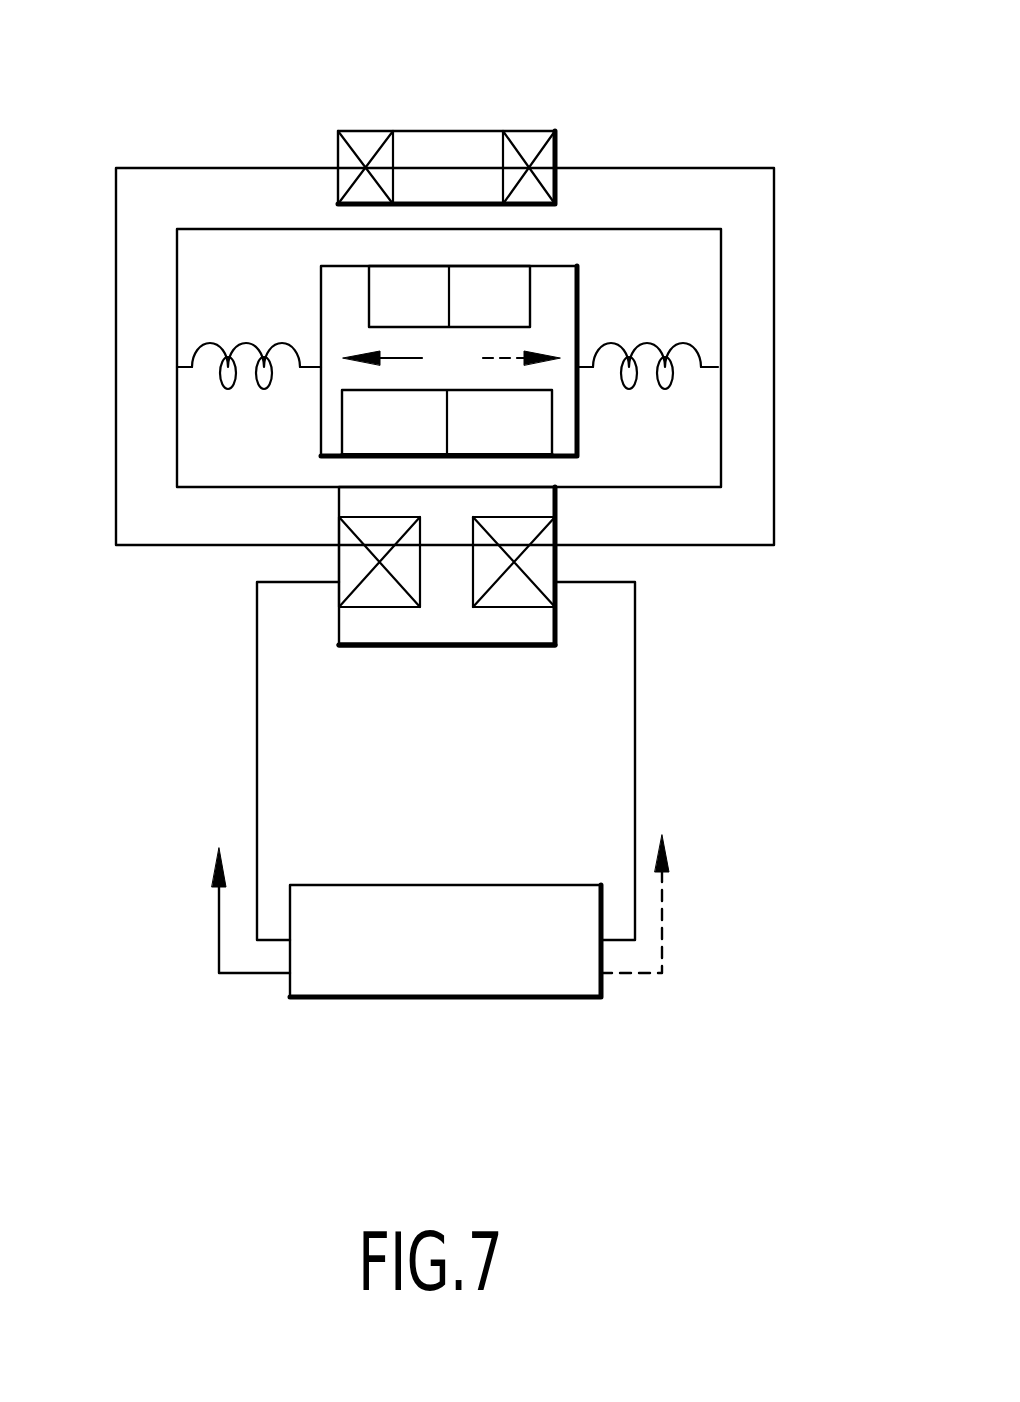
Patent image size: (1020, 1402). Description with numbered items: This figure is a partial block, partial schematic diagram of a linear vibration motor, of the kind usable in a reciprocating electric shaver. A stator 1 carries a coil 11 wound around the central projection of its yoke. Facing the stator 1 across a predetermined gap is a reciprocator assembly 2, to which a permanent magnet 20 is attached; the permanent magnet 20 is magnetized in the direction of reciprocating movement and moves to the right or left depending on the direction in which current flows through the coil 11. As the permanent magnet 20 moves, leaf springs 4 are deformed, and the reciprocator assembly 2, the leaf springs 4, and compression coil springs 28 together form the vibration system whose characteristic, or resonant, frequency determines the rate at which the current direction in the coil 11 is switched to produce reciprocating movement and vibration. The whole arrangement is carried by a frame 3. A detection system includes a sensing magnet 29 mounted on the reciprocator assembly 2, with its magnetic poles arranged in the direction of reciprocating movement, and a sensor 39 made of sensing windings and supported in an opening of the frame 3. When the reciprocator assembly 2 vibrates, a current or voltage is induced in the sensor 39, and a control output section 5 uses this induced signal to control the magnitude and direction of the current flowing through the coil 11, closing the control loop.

The stator 1 is at (517, 647).
The reciprocator assembly 2 is at (328, 443).
The frame 3 is at (153, 168).
The leaf springs 4 is at (463, 432).
The compression coil springs 28 is at (232, 378).
The control output section 5 is at (475, 997).
The coil 11 is at (382, 605).
The permanent magnet 20 is at (533, 443).
The sensing magnet 29 is at (497, 295).
The sensor 39 is at (542, 131).